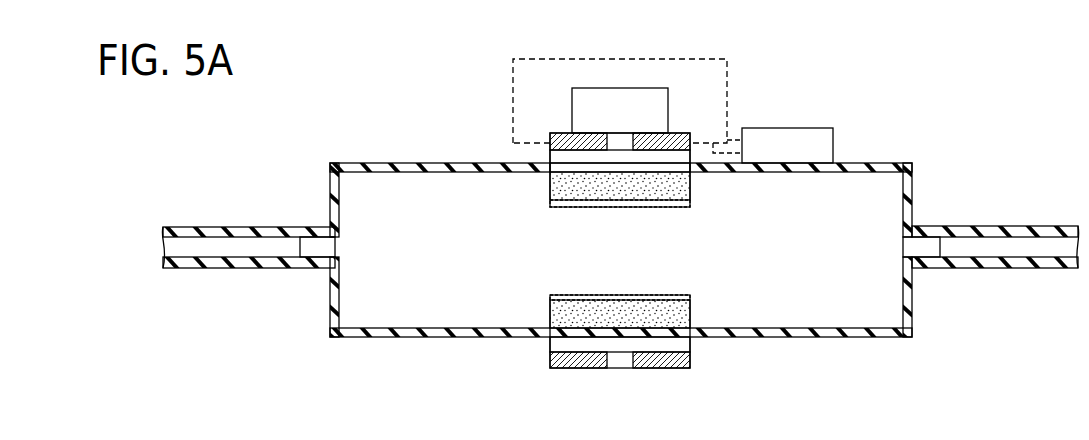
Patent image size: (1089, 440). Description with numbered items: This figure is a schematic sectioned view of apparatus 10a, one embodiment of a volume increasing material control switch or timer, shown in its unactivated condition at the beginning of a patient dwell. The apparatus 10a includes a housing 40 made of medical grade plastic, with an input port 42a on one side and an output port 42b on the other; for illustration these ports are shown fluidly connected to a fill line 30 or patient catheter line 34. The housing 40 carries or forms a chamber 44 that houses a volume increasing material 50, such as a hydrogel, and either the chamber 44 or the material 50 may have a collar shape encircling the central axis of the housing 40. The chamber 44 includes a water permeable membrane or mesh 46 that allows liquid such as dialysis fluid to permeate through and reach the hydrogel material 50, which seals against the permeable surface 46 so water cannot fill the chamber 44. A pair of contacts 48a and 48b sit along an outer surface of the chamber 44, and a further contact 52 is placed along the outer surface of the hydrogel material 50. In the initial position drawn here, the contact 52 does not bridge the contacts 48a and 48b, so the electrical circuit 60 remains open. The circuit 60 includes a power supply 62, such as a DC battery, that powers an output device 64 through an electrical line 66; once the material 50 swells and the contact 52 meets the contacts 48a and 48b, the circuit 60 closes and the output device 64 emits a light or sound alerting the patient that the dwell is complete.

The apparatus 10a is at (912, 164).
The fill line 30 is at (238, 225).
The patient catheter line 34 is at (1010, 225).
The housing 40 is at (380, 163).
The input port 42a is at (337, 242).
The output port 42b is at (915, 240).
The chamber 44 is at (550, 207).
The water permeable membrane or mesh 46 is at (612, 208).
The contact 48a is at (562, 133).
The contact 48b is at (677, 133).
The volume increasing material 50 is at (690, 183).
The contact 52 is at (572, 163).
The electrical circuit 60 is at (513, 59).
The power supply 62 is at (783, 128).
The output device 64 is at (632, 118).
The electrical line 66 is at (683, 59).